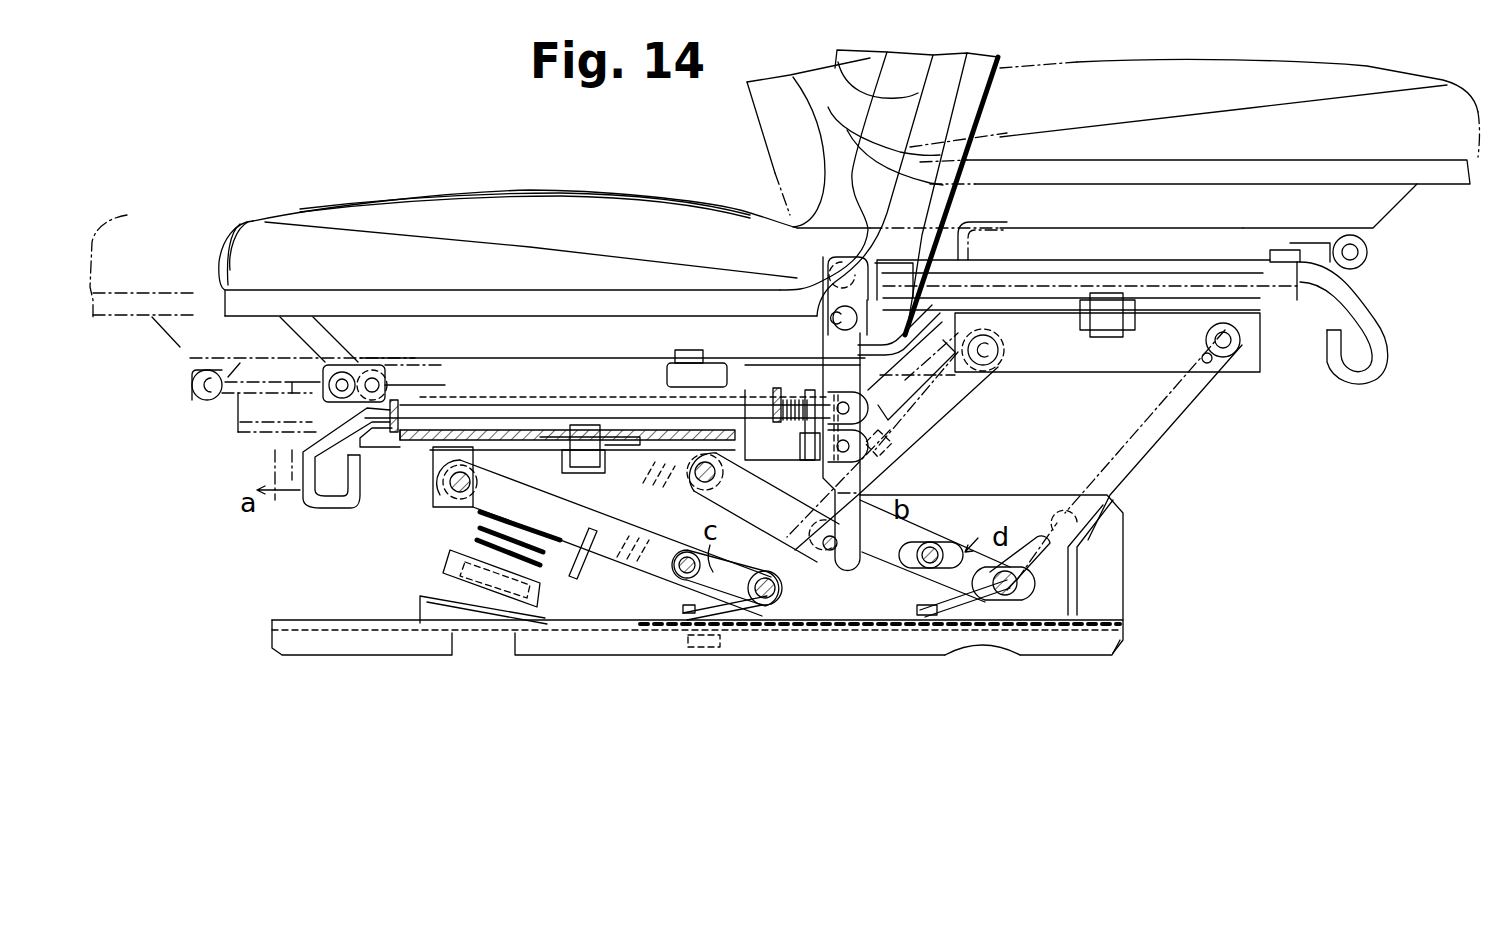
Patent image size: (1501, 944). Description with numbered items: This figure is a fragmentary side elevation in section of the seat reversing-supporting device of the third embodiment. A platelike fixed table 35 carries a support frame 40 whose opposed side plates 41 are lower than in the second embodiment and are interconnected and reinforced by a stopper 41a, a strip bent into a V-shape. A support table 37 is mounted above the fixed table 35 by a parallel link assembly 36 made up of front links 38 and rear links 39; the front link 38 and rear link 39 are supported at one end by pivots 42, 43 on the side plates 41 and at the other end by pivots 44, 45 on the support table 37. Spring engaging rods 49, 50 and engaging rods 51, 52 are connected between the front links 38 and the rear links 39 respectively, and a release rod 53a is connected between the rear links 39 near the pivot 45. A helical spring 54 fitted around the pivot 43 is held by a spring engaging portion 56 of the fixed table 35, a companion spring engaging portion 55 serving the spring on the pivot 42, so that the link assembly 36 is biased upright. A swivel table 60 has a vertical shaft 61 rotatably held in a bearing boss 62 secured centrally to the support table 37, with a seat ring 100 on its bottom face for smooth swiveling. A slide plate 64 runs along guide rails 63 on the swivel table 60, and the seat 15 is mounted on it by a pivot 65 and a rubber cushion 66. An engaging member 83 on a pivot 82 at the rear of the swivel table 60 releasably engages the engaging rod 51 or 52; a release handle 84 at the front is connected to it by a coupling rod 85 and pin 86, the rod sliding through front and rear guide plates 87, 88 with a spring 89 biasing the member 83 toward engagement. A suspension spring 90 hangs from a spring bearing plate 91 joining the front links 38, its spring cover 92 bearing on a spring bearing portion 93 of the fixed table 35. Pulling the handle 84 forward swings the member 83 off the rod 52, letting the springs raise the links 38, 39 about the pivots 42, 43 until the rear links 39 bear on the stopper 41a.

The seat 15 is at (703, 207).
The fixed table 35 is at (620, 640).
The parallel link assembly 36 is at (942, 528).
The support table 37 is at (1178, 310).
The front link 38 is at (607, 583).
The rear link 39 is at (1185, 425).
The support frame 40 is at (995, 495).
The side plate 41 is at (1107, 570).
The stopper 41a is at (1110, 533).
The pivot 42 is at (770, 600).
The pivot 43 is at (1023, 583).
The pivot 44 is at (440, 488).
The pivot 45 is at (745, 507).
The spring engaging rod 49 is at (683, 583).
The spring engaging rod 50 is at (925, 560).
The engaging rod 51 is at (573, 630).
The engaging rod 52 is at (825, 552).
The release rod 53a is at (754, 564).
The helical spring 54 is at (980, 600).
The spring engaging portion 55 is at (685, 615).
The spring engaging portion 56 is at (925, 617).
The swivel table 60 is at (1067, 262).
The vertical shaft 61 is at (582, 437).
The bearing boss 62 is at (620, 430).
The guide rail 63 is at (430, 430).
The slide plate 64 is at (545, 395).
The pivot 65 is at (328, 382).
The rubber cushion 66 is at (745, 395).
The pivot 82 is at (890, 430).
The engaging member 83 is at (857, 567).
The release handle 84 is at (1380, 335).
The coupling rod 85 is at (1145, 270).
The pin 86 is at (912, 405).
The front guide plate 87 is at (398, 385).
The rear guide plate 88 is at (790, 398).
The spring 89 is at (818, 400).
The suspension spring 90 is at (572, 572).
The spring bearing plate 91 is at (520, 540).
The spring cover 92 is at (452, 570).
The spring bearing portion 93 is at (488, 617).
The seat ring 100 is at (715, 362).